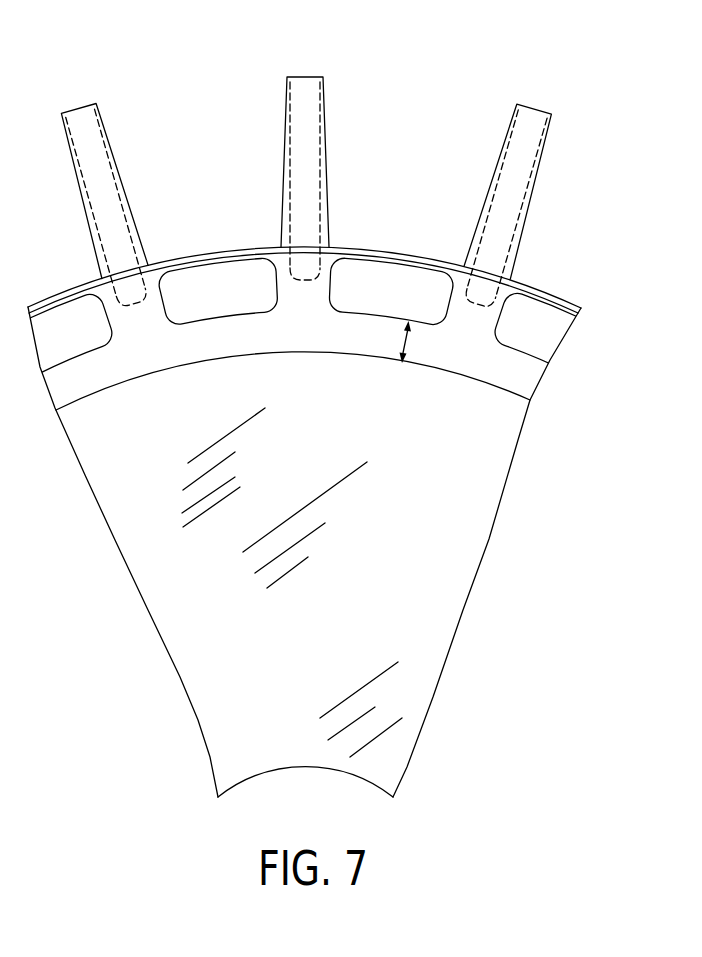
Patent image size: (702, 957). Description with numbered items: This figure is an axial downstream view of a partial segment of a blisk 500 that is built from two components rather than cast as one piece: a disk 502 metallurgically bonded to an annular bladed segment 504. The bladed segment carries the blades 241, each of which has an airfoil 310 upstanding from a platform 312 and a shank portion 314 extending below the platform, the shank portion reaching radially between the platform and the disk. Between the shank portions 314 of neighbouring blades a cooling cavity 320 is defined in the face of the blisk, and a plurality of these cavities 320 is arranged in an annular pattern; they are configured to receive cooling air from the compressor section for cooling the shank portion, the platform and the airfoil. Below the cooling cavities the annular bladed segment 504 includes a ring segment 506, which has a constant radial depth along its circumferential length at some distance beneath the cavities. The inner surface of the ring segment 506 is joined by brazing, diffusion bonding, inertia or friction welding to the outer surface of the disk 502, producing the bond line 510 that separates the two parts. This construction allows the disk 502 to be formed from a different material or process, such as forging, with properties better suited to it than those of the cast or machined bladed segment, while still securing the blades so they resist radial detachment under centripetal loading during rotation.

The blisk 500 is at (438, 96).
The disk 502 is at (490, 505).
The annular bladed segment 504 is at (304, 306).
The bond line 510 is at (292, 355).
The platform 312 is at (385, 253).
The cooling cavity 320 is at (237, 308).
The shank portion 314 is at (287, 293).
The ring segment 506 is at (413, 332).
The blade 241 is at (314, 155).
The airfoil 310 is at (110, 145).